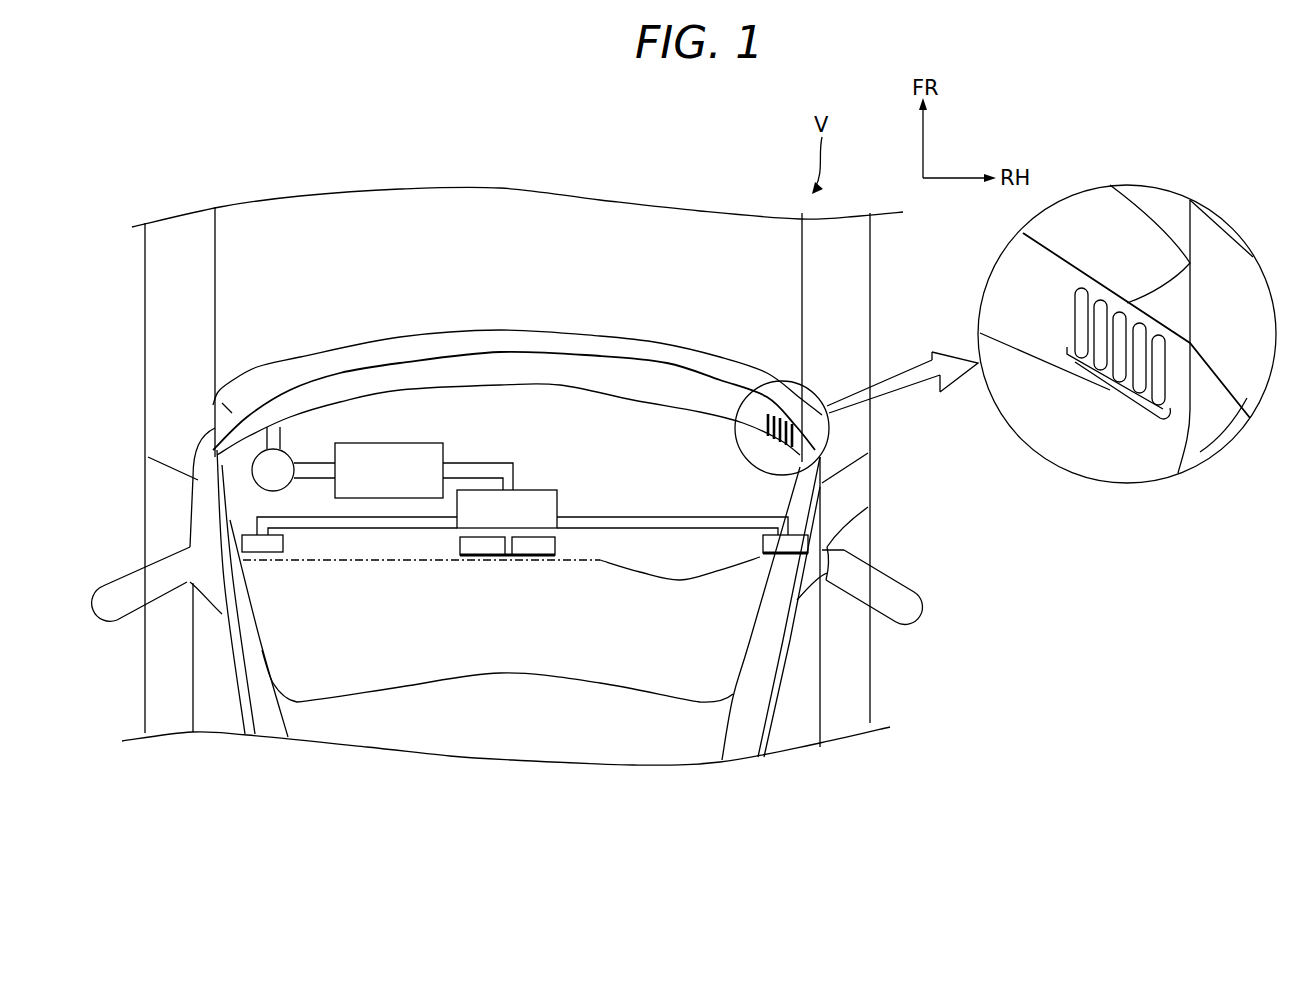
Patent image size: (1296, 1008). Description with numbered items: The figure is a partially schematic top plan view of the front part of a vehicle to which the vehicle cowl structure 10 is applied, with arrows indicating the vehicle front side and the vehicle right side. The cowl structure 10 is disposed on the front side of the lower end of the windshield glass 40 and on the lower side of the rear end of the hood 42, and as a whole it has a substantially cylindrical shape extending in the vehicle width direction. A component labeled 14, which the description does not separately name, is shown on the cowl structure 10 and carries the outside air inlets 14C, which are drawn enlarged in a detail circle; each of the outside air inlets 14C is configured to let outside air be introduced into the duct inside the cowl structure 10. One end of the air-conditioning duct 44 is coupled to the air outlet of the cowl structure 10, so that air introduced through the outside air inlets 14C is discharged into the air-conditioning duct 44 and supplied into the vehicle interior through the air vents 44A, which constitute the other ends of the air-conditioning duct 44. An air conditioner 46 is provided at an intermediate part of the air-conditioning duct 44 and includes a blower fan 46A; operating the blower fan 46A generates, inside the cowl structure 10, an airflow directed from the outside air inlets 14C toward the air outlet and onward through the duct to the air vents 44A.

The vehicle cowl structure 10 is at (719, 319).
The instrument panel 14 is at (664, 357).
The outside air inlets 14C is at (1107, 380).
The windshield glass 40 is at (507, 665).
The hood 42 is at (518, 218).
The air-conditioning duct 44 is at (517, 487).
The air vents 44A is at (276, 553).
The air conditioner 46 is at (443, 452).
The blower fan 46A is at (253, 466).